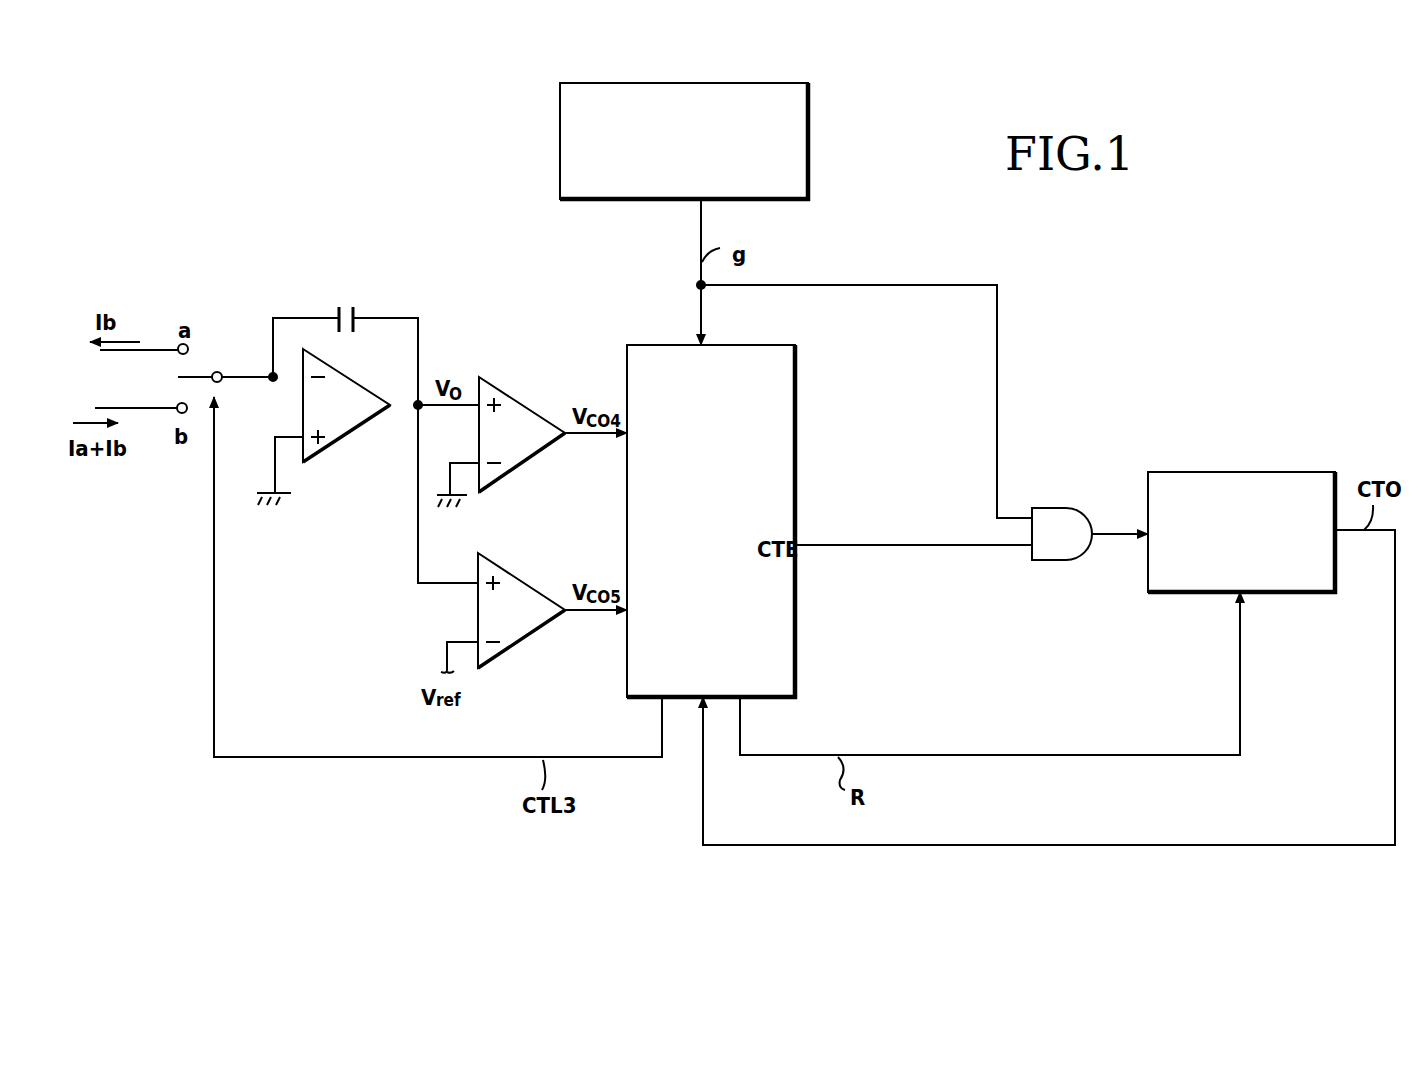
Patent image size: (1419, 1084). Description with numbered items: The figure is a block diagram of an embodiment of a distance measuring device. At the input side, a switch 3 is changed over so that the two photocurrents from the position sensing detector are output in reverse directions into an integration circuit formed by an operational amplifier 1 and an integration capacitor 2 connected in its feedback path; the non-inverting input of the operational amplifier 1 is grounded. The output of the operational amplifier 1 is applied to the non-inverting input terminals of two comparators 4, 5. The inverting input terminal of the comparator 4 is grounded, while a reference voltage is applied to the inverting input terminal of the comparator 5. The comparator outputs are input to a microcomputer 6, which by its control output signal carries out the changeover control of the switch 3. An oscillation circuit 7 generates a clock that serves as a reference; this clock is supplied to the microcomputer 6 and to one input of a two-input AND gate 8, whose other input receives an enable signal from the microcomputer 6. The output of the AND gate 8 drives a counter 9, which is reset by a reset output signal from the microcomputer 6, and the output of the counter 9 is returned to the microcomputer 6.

The operational amplifier 1 is at (346, 432).
The integration capacitor 2 is at (347, 305).
The switch 3 is at (198, 369).
The comparator 4 is at (518, 398).
The comparator 5 is at (522, 578).
The microcomputer 6 is at (640, 344).
The oscillation circuit 7 is at (687, 83).
The 2-input AND gate 8 is at (1057, 508).
The counter 9 is at (1266, 472).